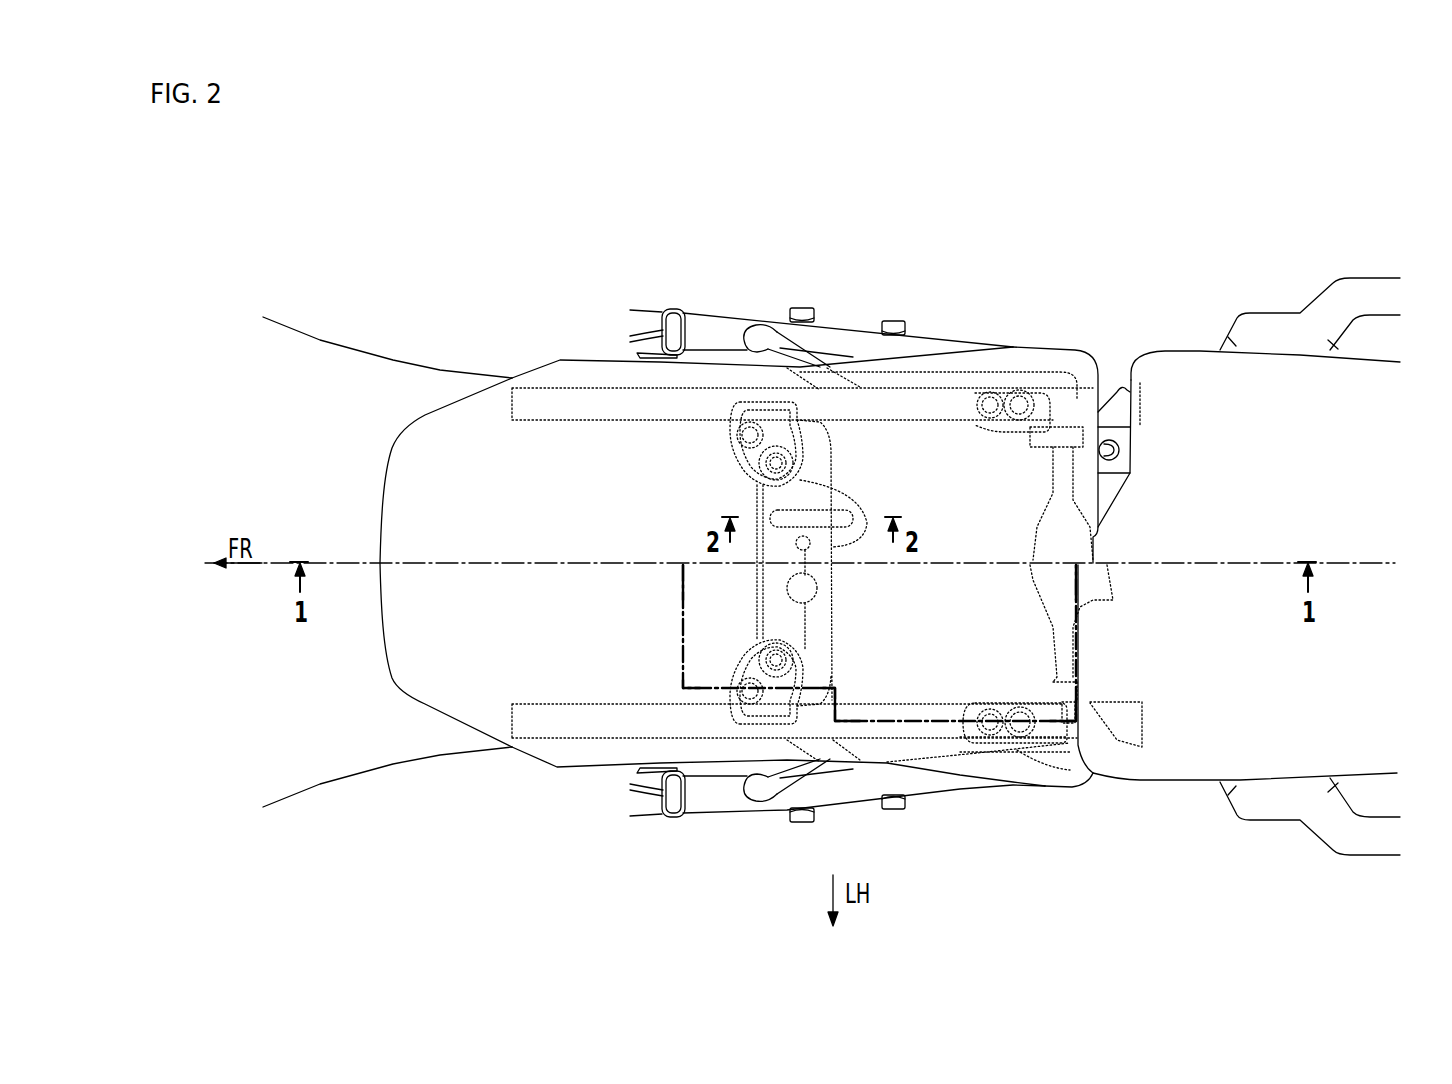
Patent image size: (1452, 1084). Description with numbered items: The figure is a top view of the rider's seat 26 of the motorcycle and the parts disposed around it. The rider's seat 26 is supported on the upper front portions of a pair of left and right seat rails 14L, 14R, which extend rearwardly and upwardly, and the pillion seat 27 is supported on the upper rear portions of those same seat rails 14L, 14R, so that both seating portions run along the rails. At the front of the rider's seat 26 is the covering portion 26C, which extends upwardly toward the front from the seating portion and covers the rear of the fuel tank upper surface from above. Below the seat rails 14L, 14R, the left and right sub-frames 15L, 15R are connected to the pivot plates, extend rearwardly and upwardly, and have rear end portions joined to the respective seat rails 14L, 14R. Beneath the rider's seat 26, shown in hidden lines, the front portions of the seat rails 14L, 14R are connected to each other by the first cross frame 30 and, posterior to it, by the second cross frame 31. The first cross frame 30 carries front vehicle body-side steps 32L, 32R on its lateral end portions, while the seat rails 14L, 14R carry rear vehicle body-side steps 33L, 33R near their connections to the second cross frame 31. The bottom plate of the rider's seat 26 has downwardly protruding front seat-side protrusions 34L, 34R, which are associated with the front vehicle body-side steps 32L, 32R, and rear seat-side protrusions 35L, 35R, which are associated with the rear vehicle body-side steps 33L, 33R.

The right seat rail 14R is at (593, 387).
The left seat rail 14L is at (597, 738).
The right sub-frame 15R is at (850, 330).
The left sub-frame 15L is at (930, 790).
The rider's seat 26 is at (1050, 348).
The covering portion 26C is at (438, 680).
The pillion seat 27 is at (1193, 350).
The first cross frame 30 is at (755, 590).
The second cross frame 31 is at (1053, 648).
The right front vehicle body-side step 32R is at (805, 461).
The left front vehicle body-side step 32L is at (797, 649).
The right rear vehicle body-side step 33R is at (1035, 440).
The left rear vehicle body-side step 33L is at (1009, 701).
The right front seat-side protrusion 34R is at (730, 447).
The left front seat-side protrusion 34L is at (723, 680).
The right rear seat-side protrusion 35R is at (1015, 415).
The left rear seat-side protrusion 35L is at (1017, 743).